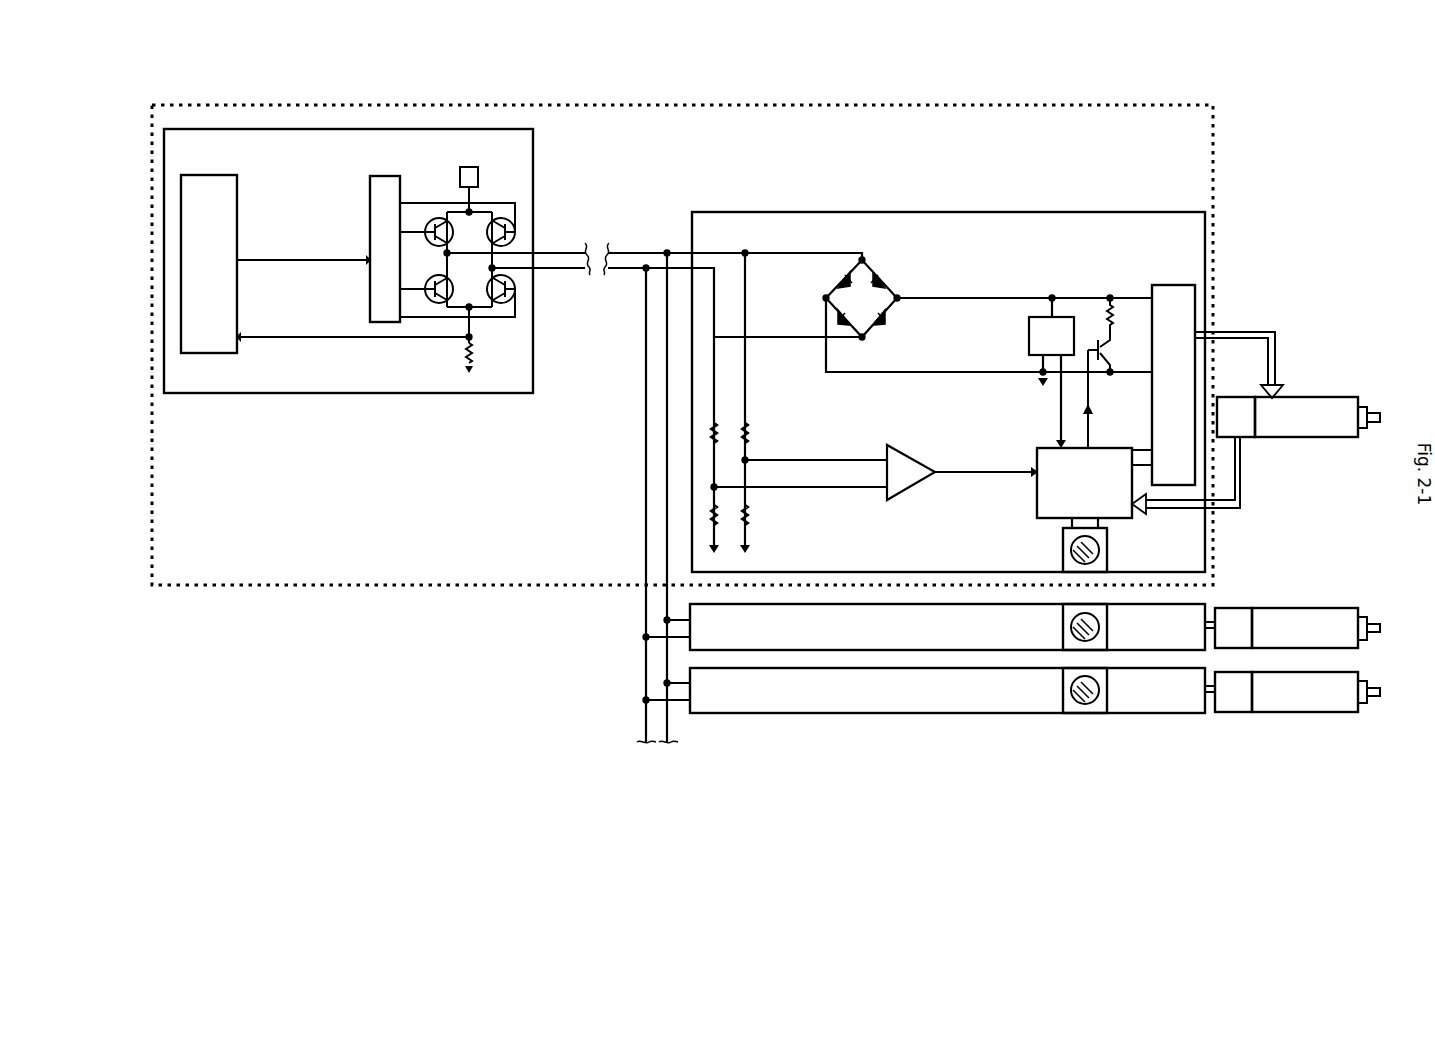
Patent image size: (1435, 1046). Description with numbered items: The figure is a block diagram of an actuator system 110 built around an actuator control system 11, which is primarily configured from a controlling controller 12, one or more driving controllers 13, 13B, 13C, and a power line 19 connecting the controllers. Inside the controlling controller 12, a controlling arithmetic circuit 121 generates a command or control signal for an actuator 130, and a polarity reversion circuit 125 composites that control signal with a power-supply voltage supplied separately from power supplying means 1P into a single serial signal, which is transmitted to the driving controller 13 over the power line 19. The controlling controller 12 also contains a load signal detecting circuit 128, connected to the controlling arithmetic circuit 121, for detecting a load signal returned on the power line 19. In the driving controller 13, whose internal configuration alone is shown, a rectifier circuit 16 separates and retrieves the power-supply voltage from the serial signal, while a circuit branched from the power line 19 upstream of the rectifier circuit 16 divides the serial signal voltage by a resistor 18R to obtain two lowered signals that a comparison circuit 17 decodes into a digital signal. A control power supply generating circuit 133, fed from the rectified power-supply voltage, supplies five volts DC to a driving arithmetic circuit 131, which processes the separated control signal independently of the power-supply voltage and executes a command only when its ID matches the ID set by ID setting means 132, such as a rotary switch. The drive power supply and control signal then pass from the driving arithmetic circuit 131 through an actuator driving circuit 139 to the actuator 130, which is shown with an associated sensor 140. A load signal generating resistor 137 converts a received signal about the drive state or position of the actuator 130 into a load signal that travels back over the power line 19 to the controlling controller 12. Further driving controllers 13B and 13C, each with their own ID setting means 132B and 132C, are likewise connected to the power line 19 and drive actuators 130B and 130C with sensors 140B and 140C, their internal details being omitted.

The actuator system 110 is at (1382, 93).
The actuator control system 11 is at (438, 592).
The controlling controller 12 is at (533, 163).
The controlling arithmetic circuit 121 is at (200, 172).
The polarity reversion circuit 125 is at (422, 192).
The power supplying means 1P is at (480, 175).
The load signal detecting circuit 128 is at (430, 345).
The power line 19 is at (568, 251).
The driving controller 13 is at (987, 211).
The rectifier circuit 16 is at (815, 285).
The resistor 18R is at (756, 424).
The comparison circuit 17 is at (910, 492).
The control power supply generating circuit 133 is at (1038, 314).
The load signal generating resistor 137 is at (1090, 320).
The driving arithmetic circuit 131 is at (1033, 507).
The actuator driving circuit 139 is at (1183, 284).
The ID setting means 132 is at (1117, 560).
The sensor 140 is at (1242, 437).
The actuator 130 is at (1318, 396).
The driving controller 13B is at (708, 650).
The ID setting means 132B is at (1117, 648).
The sensor 140B is at (1240, 607).
The actuator 130B is at (1308, 607).
The driving controller 13C is at (742, 714).
The ID setting means 132C is at (1117, 711).
The sensor 140C is at (1227, 713).
The actuator 130C is at (1298, 713).